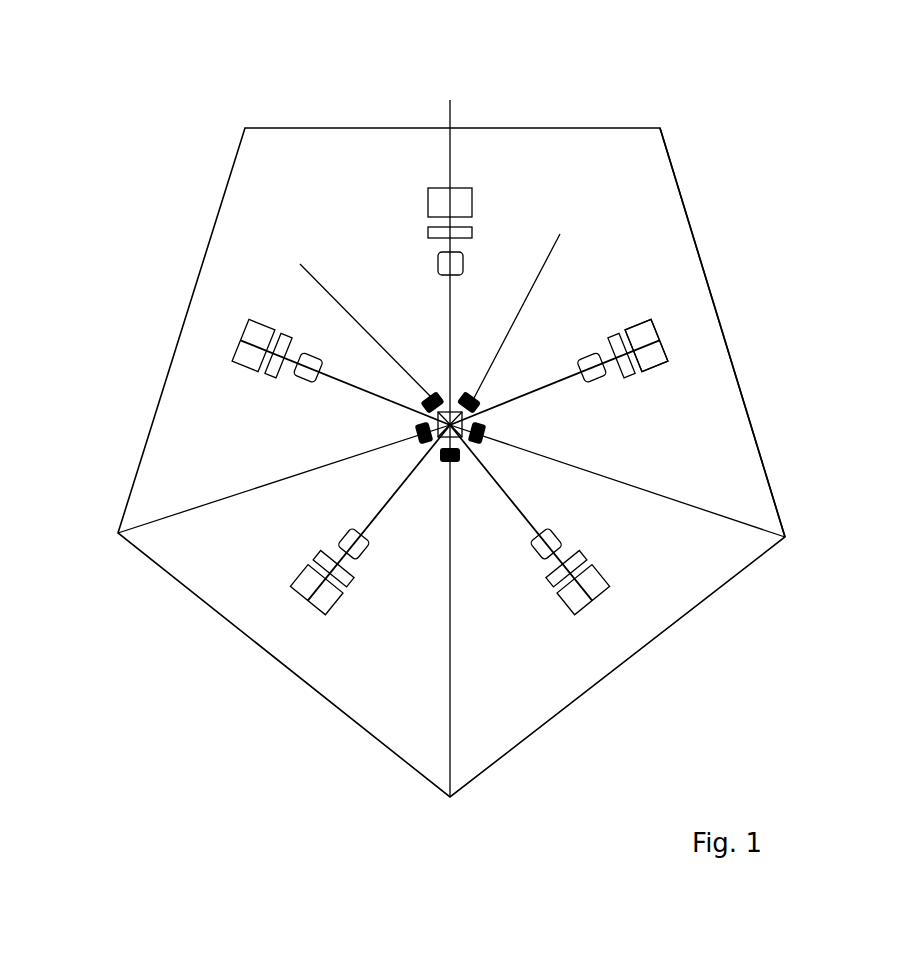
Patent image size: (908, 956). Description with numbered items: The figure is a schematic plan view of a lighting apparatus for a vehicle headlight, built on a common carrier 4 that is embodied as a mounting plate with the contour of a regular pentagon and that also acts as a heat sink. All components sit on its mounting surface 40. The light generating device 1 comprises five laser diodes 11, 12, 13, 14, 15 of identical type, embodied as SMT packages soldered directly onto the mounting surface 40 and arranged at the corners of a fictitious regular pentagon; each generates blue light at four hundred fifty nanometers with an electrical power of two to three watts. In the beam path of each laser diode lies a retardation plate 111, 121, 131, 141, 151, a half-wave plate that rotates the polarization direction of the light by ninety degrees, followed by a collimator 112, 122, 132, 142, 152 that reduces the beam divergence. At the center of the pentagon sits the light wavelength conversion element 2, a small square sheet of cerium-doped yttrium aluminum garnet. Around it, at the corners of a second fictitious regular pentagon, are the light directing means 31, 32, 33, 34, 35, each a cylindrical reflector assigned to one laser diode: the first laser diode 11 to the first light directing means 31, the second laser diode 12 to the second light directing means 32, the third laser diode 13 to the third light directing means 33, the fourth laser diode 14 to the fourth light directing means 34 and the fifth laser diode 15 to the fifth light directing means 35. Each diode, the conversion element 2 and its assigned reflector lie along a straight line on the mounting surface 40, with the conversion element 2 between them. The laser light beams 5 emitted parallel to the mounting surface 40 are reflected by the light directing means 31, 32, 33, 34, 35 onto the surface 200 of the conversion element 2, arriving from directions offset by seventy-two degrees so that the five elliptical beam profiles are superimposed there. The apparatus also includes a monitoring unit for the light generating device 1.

The light generating device 1 is at (726, 328).
The light wavelength conversion element 2 is at (473, 639).
The surface of the light wavelength conversion element 200 is at (486, 628).
The common carrier 4 is at (481, 462).
The mounting surface 40 is at (751, 332).
The laser light beam 5 is at (421, 420).
The first laser diode 11 is at (190, 328).
The retardation plate 111 is at (205, 307).
The collimator 112 is at (201, 369).
The second laser diode 12 is at (450, 144).
The retardation plate 121 is at (476, 146).
The collimator 122 is at (424, 164).
The third laser diode 13 is at (748, 312).
The retardation plate 131 is at (695, 307).
The collimator 132 is at (700, 366).
The fourth laser diode 14 is at (625, 639).
The retardation plate 141 is at (646, 603).
The collimator 142 is at (592, 640).
The fifth laser diode 15 is at (273, 639).
The retardation plate 151 is at (261, 614).
The collimator 152 is at (306, 638).
The first light directing means 31 is at (667, 500).
The second light directing means 32 is at (450, 645).
The third light directing means 33 is at (241, 493).
The fourth light directing means 34 is at (295, 265).
The fifth light directing means 35 is at (564, 229).